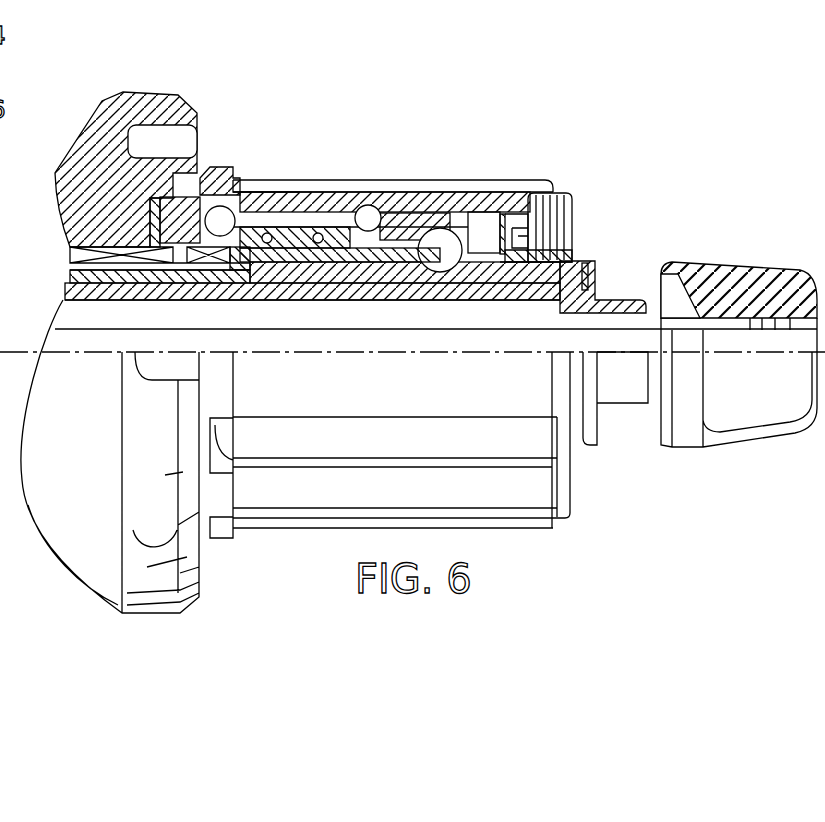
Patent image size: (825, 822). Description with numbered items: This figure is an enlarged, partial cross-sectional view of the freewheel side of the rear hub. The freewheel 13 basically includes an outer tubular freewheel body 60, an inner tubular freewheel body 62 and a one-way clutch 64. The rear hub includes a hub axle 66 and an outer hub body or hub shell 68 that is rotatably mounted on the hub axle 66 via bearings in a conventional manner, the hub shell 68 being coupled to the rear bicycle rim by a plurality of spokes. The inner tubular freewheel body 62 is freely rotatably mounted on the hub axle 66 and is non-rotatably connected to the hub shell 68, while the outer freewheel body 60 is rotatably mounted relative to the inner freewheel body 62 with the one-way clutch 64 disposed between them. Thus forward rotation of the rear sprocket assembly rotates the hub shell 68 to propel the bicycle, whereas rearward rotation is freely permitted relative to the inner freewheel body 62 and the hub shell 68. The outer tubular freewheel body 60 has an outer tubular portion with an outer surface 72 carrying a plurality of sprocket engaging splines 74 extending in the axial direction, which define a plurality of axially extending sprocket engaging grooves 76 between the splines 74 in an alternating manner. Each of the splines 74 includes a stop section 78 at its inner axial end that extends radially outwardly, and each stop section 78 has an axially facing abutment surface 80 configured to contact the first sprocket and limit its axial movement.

The freewheel 13 is at (476, 146).
The outer tubular freewheel body 60 is at (574, 195).
The inner tubular freewheel body 62 is at (382, 264).
The one-way clutch 64 is at (302, 213).
The hub axle 66 is at (620, 299).
The hub shell 68 is at (110, 97).
The outer surface 72 is at (383, 179).
The sprocket engaging splines 74 is at (538, 178).
The sprocket engaging grooves 76 is at (440, 191).
The stop section 78 is at (220, 166).
The abutment surface 80 is at (238, 179).